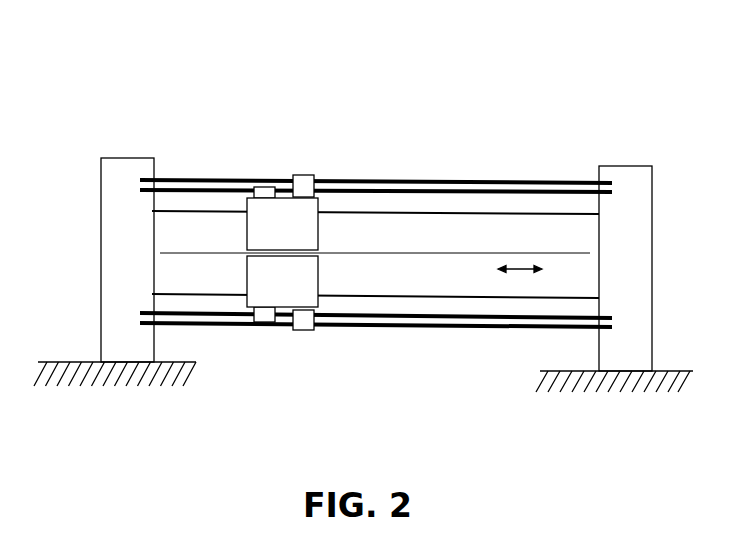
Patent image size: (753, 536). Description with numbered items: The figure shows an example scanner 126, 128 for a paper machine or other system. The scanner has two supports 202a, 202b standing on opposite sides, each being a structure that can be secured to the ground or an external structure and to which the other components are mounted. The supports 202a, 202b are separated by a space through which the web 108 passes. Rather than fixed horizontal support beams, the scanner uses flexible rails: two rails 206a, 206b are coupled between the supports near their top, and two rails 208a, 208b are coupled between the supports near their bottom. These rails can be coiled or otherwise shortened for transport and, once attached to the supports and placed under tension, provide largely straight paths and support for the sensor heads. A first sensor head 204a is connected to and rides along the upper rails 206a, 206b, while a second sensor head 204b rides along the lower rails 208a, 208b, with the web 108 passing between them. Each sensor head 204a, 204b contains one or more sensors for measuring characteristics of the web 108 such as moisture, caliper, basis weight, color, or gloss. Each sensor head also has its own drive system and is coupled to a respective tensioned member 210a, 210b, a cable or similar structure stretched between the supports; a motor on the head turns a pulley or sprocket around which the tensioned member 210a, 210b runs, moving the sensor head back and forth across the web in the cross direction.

The scanner 126 is at (363, 207).
The scanner 128 is at (530, 44).
The support 202a is at (131, 158).
The support 202b is at (627, 166).
The sensor head 204a is at (304, 231).
The sensor head 204b is at (304, 290).
The rail 206a is at (415, 178).
The rail 206b is at (493, 188).
The rail 208a is at (398, 329).
The rail 208b is at (471, 318).
The tensioned member 210a is at (350, 210).
The tensioned member 210b is at (233, 326).
The web 108 is at (443, 252).